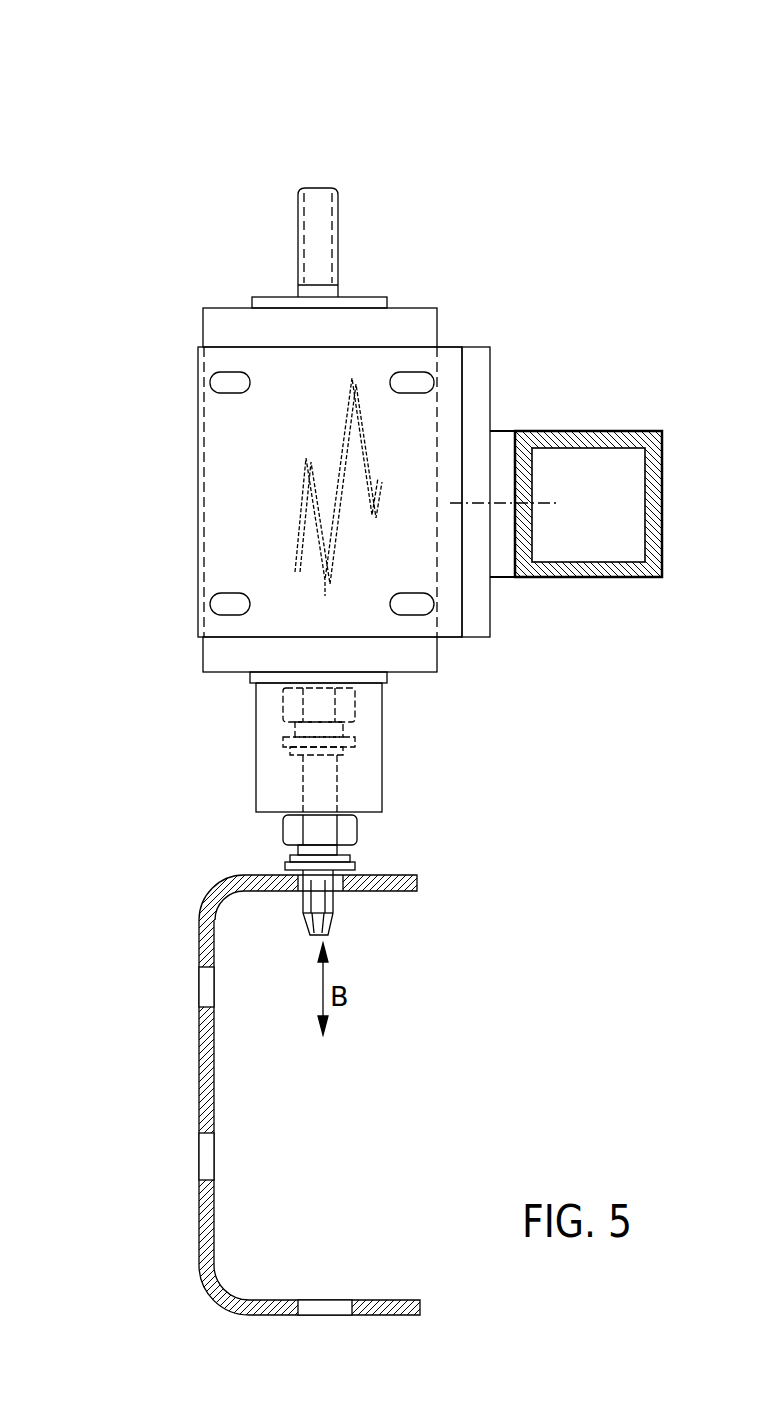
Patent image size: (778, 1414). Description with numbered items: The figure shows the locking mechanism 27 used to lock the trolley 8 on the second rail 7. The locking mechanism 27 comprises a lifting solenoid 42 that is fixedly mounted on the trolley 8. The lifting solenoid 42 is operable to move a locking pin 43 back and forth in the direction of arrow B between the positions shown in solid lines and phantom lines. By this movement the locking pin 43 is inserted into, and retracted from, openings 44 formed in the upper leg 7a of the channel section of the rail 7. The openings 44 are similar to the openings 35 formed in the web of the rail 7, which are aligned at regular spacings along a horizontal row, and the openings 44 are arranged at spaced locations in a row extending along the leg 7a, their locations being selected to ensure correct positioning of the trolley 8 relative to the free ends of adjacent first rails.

The locking mechanism 27 is at (460, 315).
The trolley 8 is at (633, 431).
The lifting solenoid 42 is at (247, 493).
The openings 44 is at (277, 873).
The upper leg 7a is at (410, 873).
The locking pin 43 is at (332, 900).
The second rail 7 is at (205, 1080).
The openings 35 is at (208, 983).